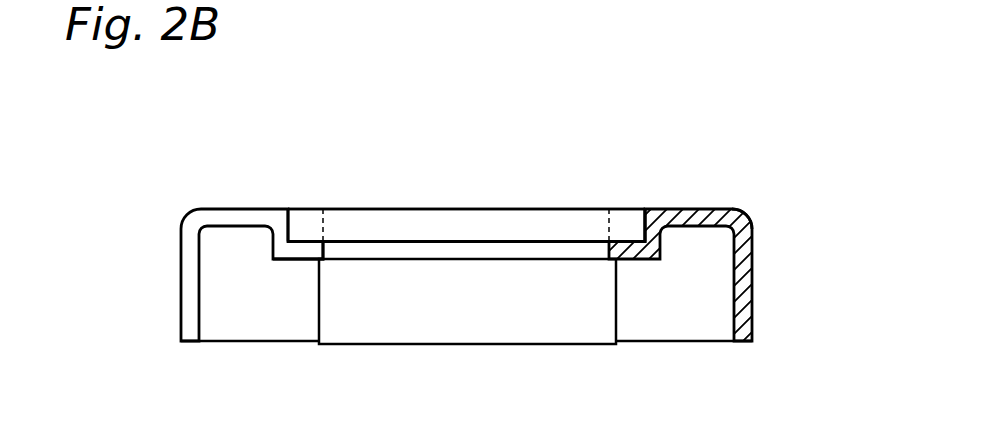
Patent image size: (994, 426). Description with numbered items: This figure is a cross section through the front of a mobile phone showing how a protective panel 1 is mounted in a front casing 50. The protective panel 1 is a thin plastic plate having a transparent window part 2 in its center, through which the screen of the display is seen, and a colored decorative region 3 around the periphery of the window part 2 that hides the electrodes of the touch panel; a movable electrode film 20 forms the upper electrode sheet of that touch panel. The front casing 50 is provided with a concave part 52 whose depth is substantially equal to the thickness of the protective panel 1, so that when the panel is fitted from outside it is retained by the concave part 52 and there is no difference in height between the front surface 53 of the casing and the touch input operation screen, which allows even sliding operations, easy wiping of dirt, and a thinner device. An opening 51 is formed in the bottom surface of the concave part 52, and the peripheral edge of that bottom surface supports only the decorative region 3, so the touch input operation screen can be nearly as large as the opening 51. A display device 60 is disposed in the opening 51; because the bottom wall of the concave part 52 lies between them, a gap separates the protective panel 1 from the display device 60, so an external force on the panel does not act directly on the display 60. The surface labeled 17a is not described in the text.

The protective panel 1 is at (534, 208).
The window part 2 is at (404, 208).
The decorative region 3 is at (307, 228).
The lower surface of layer 17a is at (513, 249).
The movable electrode film 20 is at (295, 261).
The front casing 50 is at (220, 277).
The opening 51 is at (408, 249).
The concave part 52 is at (636, 228).
The front surface of the casing 53 is at (750, 225).
The display device 60 is at (593, 312).